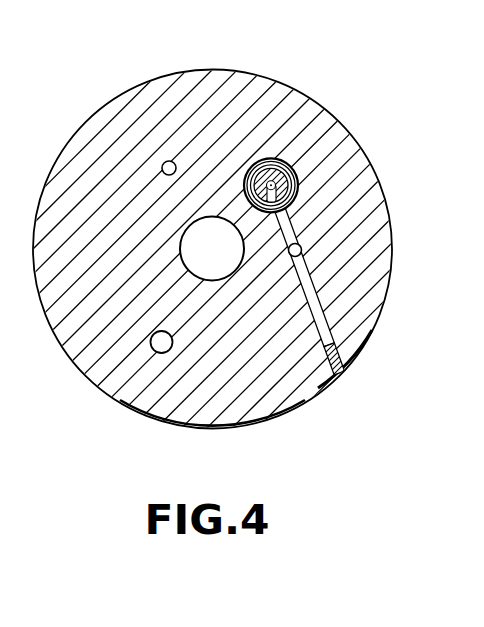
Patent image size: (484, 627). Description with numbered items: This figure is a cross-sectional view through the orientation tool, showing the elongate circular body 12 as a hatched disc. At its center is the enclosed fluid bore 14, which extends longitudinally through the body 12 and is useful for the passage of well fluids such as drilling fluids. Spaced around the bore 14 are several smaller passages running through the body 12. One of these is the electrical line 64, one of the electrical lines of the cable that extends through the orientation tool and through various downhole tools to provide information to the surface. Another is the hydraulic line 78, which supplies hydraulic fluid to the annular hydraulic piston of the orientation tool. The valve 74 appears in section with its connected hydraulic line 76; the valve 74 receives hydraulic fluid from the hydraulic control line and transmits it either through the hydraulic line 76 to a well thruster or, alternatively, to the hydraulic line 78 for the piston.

The circular body 12 is at (363, 152).
The fluid bore 14 is at (205, 244).
The electrical line 64 is at (156, 350).
The valve 74 is at (250, 167).
The hydraulic line 76 is at (303, 237).
The hydraulic line 78 is at (168, 161).